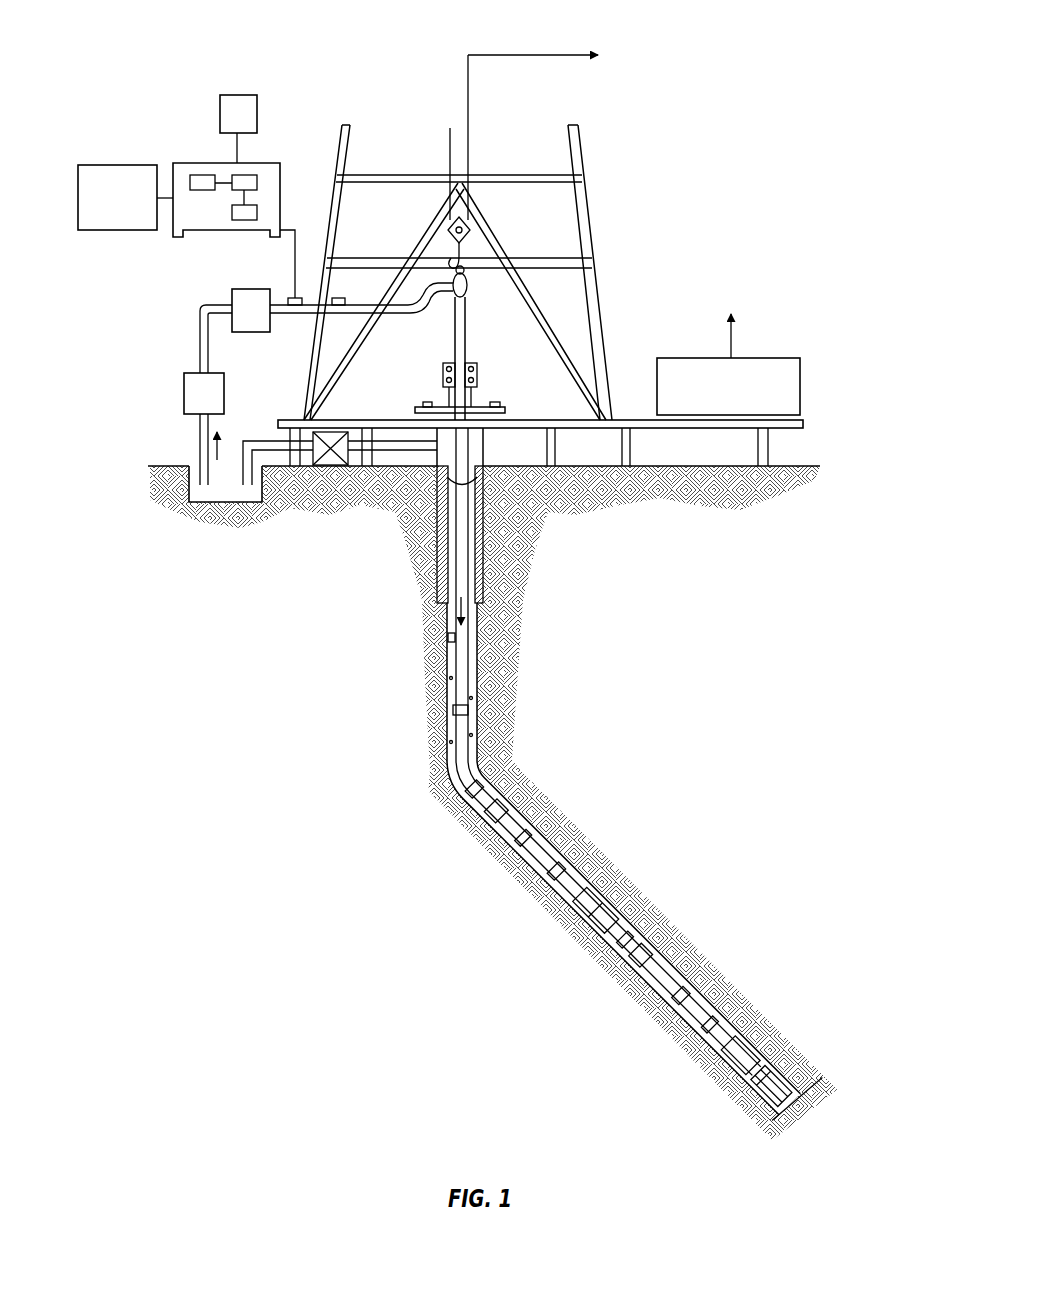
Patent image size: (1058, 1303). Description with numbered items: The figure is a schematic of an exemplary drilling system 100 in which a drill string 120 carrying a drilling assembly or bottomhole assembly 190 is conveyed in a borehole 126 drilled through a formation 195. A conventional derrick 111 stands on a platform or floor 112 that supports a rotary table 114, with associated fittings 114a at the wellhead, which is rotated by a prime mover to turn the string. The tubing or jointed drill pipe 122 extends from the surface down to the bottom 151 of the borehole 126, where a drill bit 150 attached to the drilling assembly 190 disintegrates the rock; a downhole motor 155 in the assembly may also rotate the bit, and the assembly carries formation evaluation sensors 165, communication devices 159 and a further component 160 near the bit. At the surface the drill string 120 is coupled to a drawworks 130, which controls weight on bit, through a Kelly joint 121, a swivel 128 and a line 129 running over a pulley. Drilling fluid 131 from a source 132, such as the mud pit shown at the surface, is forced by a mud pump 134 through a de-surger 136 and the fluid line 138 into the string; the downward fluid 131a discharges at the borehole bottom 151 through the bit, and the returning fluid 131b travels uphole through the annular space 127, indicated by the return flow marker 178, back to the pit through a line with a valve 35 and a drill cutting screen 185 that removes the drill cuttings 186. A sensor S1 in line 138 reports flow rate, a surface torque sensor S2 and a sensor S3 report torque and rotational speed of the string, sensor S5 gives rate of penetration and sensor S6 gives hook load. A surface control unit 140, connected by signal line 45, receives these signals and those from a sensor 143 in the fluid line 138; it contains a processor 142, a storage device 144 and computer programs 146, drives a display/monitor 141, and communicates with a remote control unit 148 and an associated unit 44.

The drilling system 100 is at (215, 44).
The display/monitor 141 is at (238, 93).
The surface control unit 140 is at (205, 161).
The processor 142 is at (197, 175).
The storage device 144 is at (245, 175).
The computer programs 146 is at (244, 220).
The remote control unit 148 is at (125, 197).
The surface controller 44 is at (118, 232).
The signal line 45 is at (283, 222).
The sensor 143 is at (293, 297).
The de-surger 136 is at (230, 296).
The fluid line 138 is at (300, 315).
The mud pump 134 is at (182, 390).
The source of drilling fluid 132 is at (222, 497).
The drilling fluid 131 is at (195, 470).
The valve 35 is at (390, 452).
The derrick 111 is at (598, 273).
The platform or floor 112 is at (620, 420).
The drill cutting screen 185 is at (322, 421).
The line 129 is at (472, 152).
The hook load sensor S6 is at (445, 262).
The swivel 128 is at (453, 296).
The Kelly joint 121 is at (468, 345).
The rate of penetration sensor S5 is at (468, 310).
The flow rate sensor S1 is at (338, 297).
The tongs/slips 114a is at (478, 378).
The rotary table 114 is at (485, 413).
The rotational speed sensor S3 is at (425, 402).
The surface torque sensor S2 is at (496, 402).
The drawworks 130 is at (772, 358).
The borehole 126 is at (478, 766).
The annular space 127 is at (500, 796).
The drill string 120 is at (470, 682).
The downhole motor 155 is at (550, 845).
The formation evaluation sensors 165 is at (635, 968).
The drill collar/BHA 160 is at (748, 1065).
The drill bit 150 is at (782, 1060).
The communication devices 159 is at (770, 1040).
The borehole bottom 151 is at (775, 1125).
The drilling fluid from the drilling tubular 131a is at (458, 622).
The drill cuttings 186 is at (468, 625).
The tubing 122 is at (447, 672).
The returning drilling fluid 131b is at (460, 760).
The annulus flow 178 is at (470, 806).
The drilling assembly 190 is at (686, 836).
The formation 195 is at (749, 871).